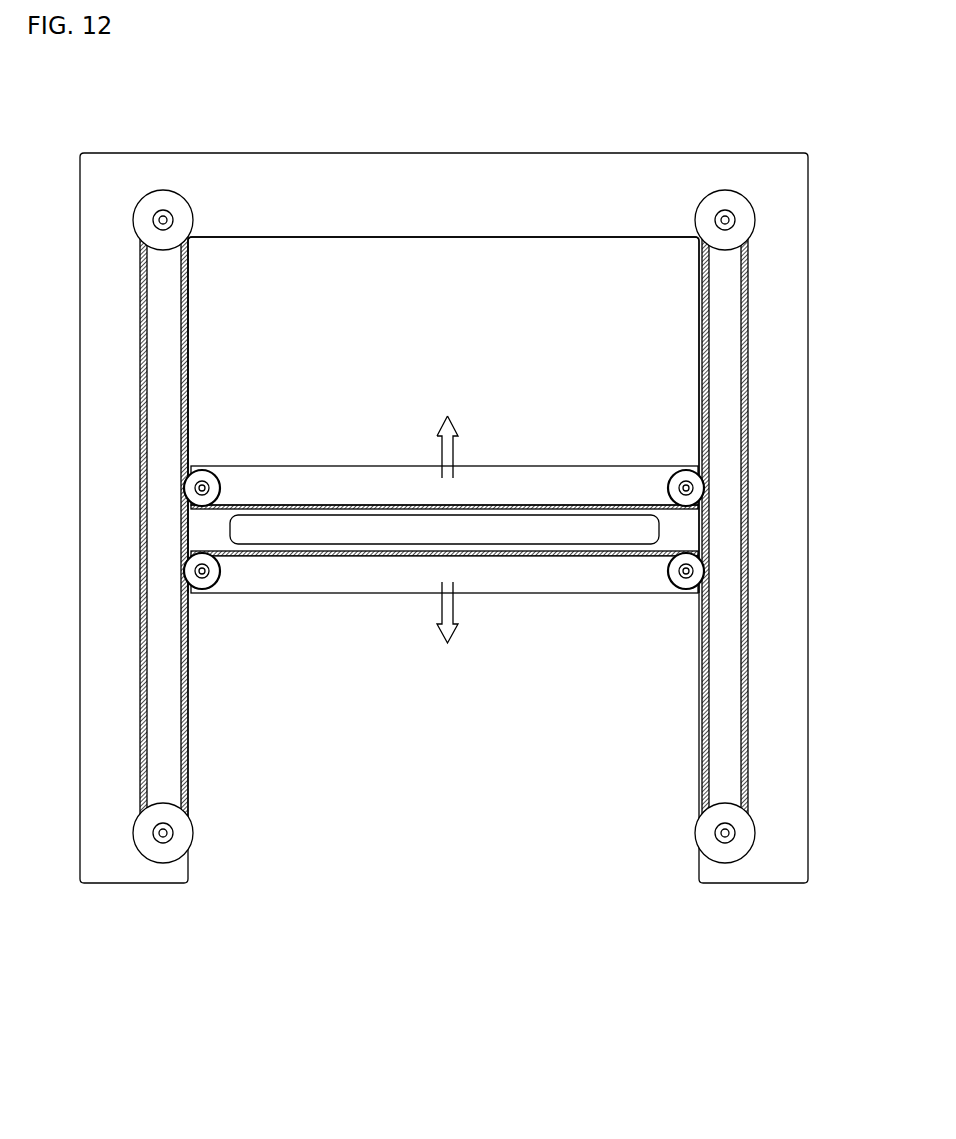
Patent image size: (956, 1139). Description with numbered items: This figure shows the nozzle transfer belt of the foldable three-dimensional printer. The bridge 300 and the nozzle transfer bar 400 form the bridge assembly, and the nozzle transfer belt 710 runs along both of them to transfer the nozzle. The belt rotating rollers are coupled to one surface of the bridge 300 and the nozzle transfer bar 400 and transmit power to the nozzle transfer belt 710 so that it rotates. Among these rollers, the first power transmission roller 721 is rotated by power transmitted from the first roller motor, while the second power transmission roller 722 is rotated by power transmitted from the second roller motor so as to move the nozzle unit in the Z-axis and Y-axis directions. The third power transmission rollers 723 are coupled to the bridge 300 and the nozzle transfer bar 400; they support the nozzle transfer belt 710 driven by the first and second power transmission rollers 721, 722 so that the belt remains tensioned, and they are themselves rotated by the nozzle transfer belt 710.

The bridge 300 is at (483, 182).
The nozzle transfer bar 400 is at (336, 583).
The nozzle transfer belt 710 is at (748, 669).
The first power transmission roller 721 is at (730, 850).
The second power transmission roller 722 is at (163, 850).
The third power transmission roller 723 is at (160, 238).